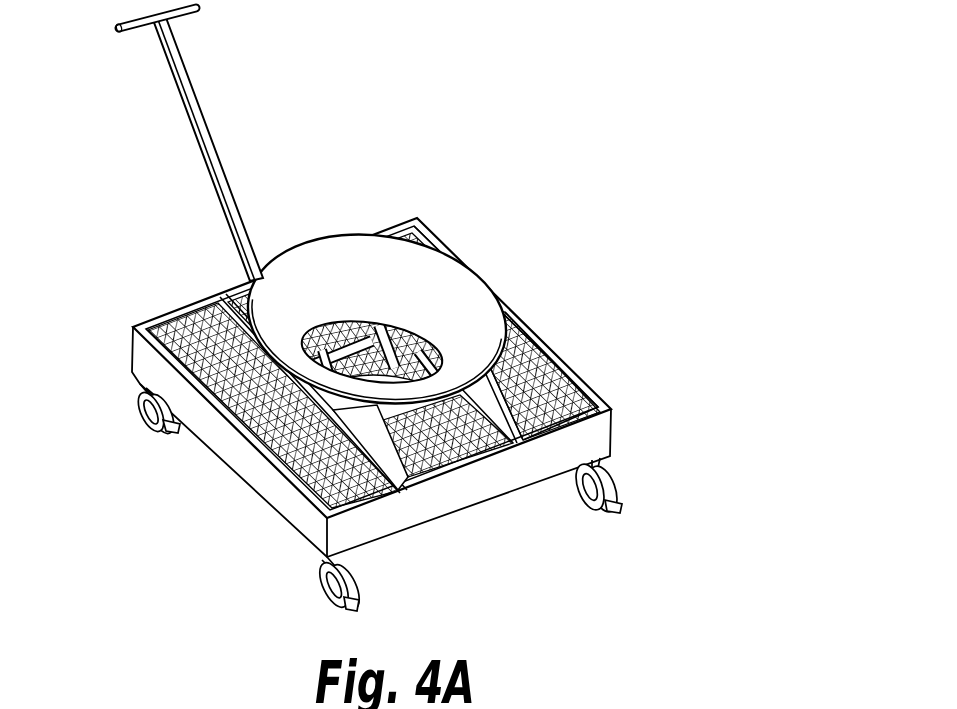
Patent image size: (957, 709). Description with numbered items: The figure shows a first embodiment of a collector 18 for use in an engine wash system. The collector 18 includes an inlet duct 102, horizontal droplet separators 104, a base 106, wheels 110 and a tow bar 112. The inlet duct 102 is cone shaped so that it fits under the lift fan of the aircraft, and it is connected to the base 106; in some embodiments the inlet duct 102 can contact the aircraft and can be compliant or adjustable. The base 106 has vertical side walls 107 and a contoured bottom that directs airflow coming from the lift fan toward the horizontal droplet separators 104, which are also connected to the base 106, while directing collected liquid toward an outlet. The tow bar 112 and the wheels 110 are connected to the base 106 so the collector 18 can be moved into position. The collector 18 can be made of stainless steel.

The collector 18 is at (570, 190).
The inlet duct 102 is at (468, 290).
The horizontal droplet separators 104 is at (262, 437).
The base 106 is at (492, 522).
The vertical side walls 107 is at (600, 440).
The wheels 110 is at (140, 420).
The tow bar 112 is at (222, 162).